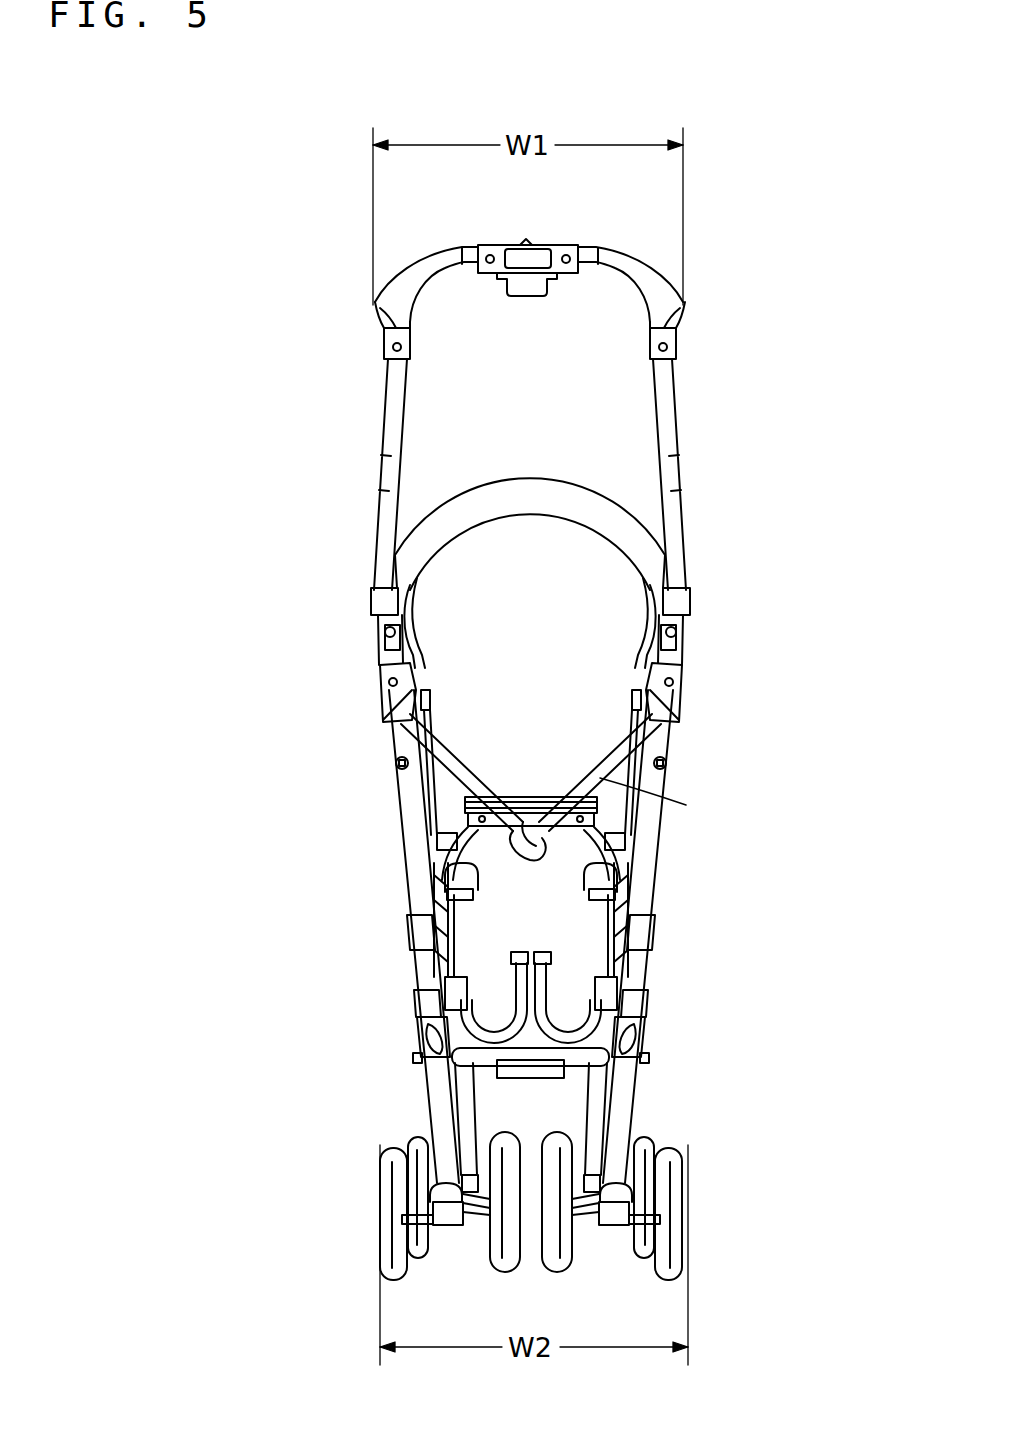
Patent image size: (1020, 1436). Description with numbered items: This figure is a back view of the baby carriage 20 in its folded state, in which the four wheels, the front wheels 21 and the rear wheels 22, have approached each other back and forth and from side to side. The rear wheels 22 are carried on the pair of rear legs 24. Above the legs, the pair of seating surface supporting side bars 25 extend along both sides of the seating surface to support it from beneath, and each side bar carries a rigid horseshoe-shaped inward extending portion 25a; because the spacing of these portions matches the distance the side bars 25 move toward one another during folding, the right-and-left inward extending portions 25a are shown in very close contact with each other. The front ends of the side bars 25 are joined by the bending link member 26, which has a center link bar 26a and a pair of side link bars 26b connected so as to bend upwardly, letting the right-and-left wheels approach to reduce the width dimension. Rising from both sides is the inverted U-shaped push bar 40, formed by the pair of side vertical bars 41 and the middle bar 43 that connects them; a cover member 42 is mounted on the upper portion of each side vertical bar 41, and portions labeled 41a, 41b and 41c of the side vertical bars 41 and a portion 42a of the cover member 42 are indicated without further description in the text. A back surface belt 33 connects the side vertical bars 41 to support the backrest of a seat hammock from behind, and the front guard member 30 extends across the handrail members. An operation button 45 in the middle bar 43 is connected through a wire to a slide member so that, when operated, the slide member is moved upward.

The baby carriage 20 is at (295, 237).
The front wheels 21 is at (415, 1145).
The rear wheels 22 is at (385, 1170).
The rear legs 24 is at (432, 1097).
The seating surface supporting side bars 25 is at (430, 945).
The inward extending portion 25a is at (500, 978).
The bending link member 26 is at (524, 802).
The center link bar 26a is at (535, 822).
The side link bars 26b is at (438, 836).
The front guard member 30 is at (529, 490).
The back surface belt 33 is at (612, 770).
The push bar 40 is at (712, 348).
The side vertical bars 41 is at (387, 459).
The lower rod portion 41a is at (416, 881).
The intermediate rod portion 41b is at (385, 491).
The upper rod end 41c is at (441, 258).
The cover member 42 is at (430, 280).
The handle joint 42a is at (372, 303).
The middle bar 43 is at (517, 250).
The operation button 45 is at (527, 296).